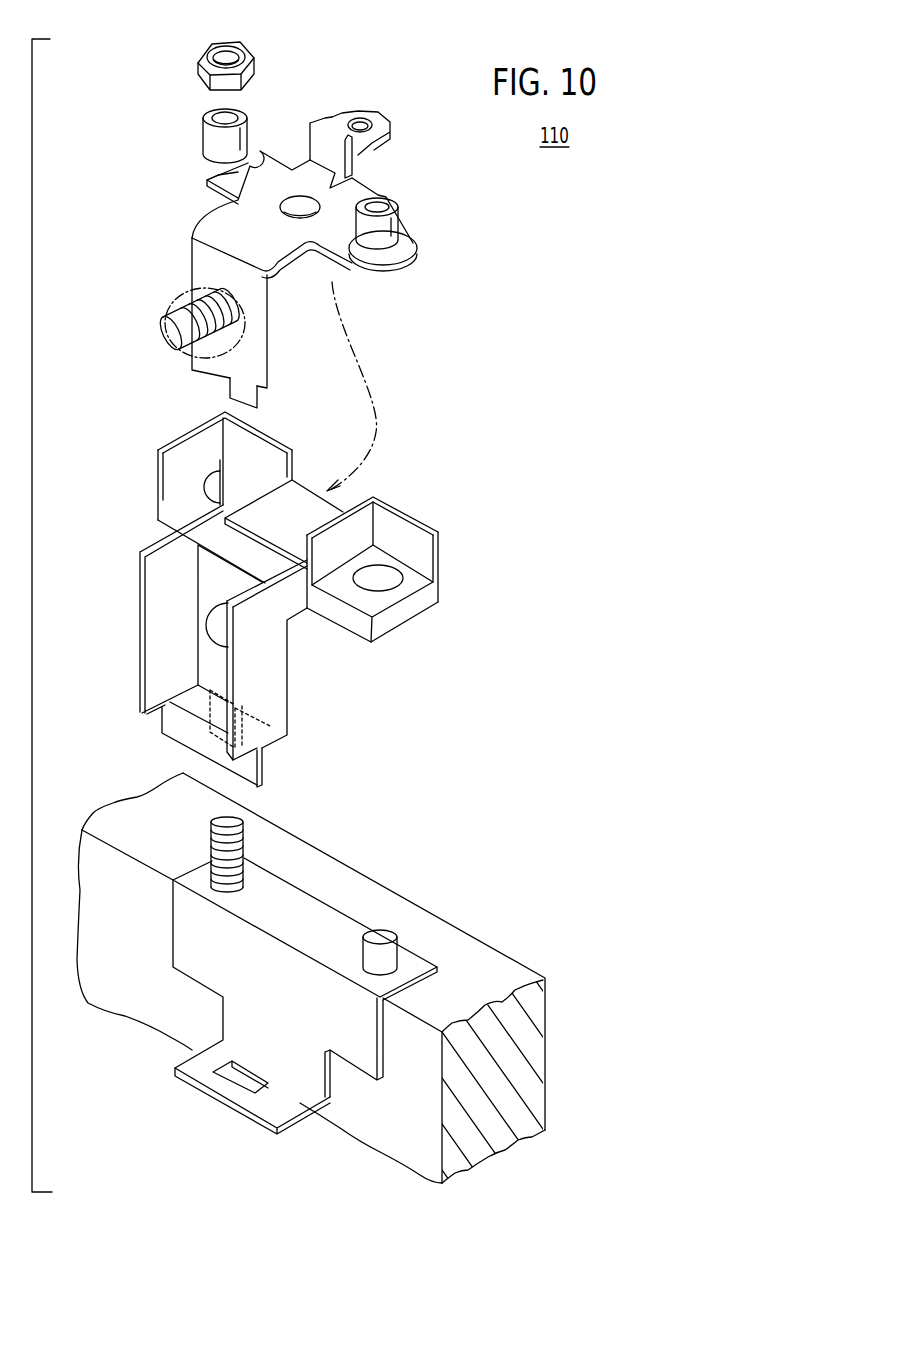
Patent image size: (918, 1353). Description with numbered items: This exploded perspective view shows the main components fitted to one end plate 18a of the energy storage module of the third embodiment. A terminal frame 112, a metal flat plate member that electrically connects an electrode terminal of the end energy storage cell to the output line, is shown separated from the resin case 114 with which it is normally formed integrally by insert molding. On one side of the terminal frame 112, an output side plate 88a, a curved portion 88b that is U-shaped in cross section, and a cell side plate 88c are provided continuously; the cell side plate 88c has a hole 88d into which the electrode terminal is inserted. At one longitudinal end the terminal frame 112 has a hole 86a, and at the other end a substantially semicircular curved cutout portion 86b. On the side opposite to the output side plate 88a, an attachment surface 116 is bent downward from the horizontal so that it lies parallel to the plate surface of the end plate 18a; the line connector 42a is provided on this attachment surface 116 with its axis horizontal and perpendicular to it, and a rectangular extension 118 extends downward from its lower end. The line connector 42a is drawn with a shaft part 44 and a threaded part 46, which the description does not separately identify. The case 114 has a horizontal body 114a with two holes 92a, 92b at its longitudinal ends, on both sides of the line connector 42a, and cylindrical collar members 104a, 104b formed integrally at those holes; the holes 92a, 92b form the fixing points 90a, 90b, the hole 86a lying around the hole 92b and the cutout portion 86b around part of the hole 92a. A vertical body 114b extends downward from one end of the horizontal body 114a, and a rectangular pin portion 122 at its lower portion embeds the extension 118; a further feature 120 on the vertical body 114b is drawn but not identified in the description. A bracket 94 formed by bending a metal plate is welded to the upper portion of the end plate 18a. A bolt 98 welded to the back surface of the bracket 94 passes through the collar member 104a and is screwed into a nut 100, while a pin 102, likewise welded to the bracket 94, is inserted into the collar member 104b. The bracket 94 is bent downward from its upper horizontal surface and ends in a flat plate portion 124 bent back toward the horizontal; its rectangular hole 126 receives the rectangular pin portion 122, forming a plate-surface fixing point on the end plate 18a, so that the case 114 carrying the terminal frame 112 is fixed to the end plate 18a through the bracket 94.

The nut 100 is at (196, 66).
The collar member 104a is at (210, 136).
The collar member 104b is at (400, 219).
The hole 86a is at (385, 258).
The curved cutout portion 86b is at (206, 178).
The output side plate 88a is at (303, 165).
The curved portion 88b is at (321, 118).
The cell side plate 88c is at (380, 122).
The hole 88d is at (359, 120).
The terminal frame 112 is at (310, 279).
The attachment surface 116 is at (258, 348).
The rectangular extension 118 is at (232, 383).
The line connector 42a is at (149, 321).
The bolt shaft 44 is at (172, 338).
The threaded portion 46 is at (178, 297).
The hole 92a is at (205, 488).
The hole 92b is at (380, 576).
The case 114 is at (304, 599).
The horizontal body 114a is at (402, 558).
The vertical body 114b is at (314, 693).
The tab 120 is at (297, 769).
The rectangular pin portion 122 is at (212, 732).
The fixing point 90a is at (271, 826).
The fixing point 90b is at (434, 921).
The bracket 94 is at (286, 969).
The bolt 98 is at (210, 845).
The pin 102 is at (388, 928).
The flat plate portion 124 is at (237, 1108).
The rectangular hole 126 is at (240, 1086).
The end plate 18a is at (374, 1140).